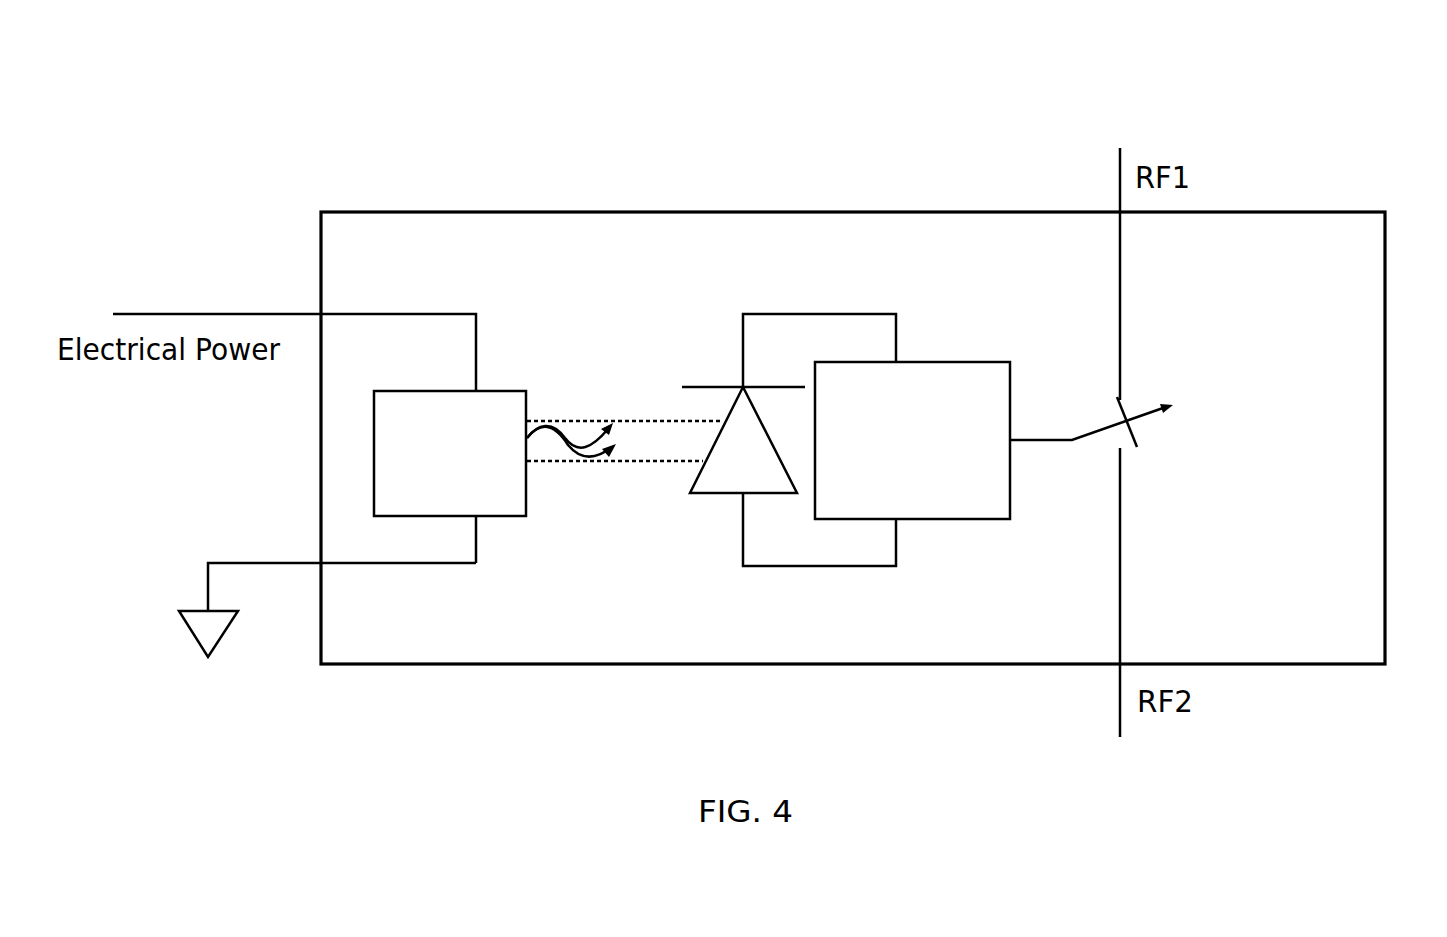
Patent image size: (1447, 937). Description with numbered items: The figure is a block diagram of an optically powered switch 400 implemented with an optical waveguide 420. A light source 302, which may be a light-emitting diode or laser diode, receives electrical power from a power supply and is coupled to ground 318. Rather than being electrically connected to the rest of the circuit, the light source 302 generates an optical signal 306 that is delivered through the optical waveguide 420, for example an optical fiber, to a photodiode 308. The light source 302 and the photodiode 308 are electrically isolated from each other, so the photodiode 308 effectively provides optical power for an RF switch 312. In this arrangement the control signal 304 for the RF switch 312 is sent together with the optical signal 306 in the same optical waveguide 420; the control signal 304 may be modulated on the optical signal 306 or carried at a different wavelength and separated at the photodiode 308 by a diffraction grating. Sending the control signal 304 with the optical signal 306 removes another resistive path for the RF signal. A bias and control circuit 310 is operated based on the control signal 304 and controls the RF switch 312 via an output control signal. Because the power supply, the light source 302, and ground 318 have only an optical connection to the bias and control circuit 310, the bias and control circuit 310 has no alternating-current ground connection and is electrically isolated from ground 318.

The light source 302 is at (497, 517).
The control signal 304 is at (593, 445).
The optical signal 306 is at (572, 449).
The photodiode 308 is at (712, 386).
The bias and control circuit 310 is at (990, 362).
The RF switch 312 is at (1113, 396).
The ground 318 is at (190, 610).
The optically powered switch 400 is at (1360, 80).
The optical waveguide 420 is at (648, 462).